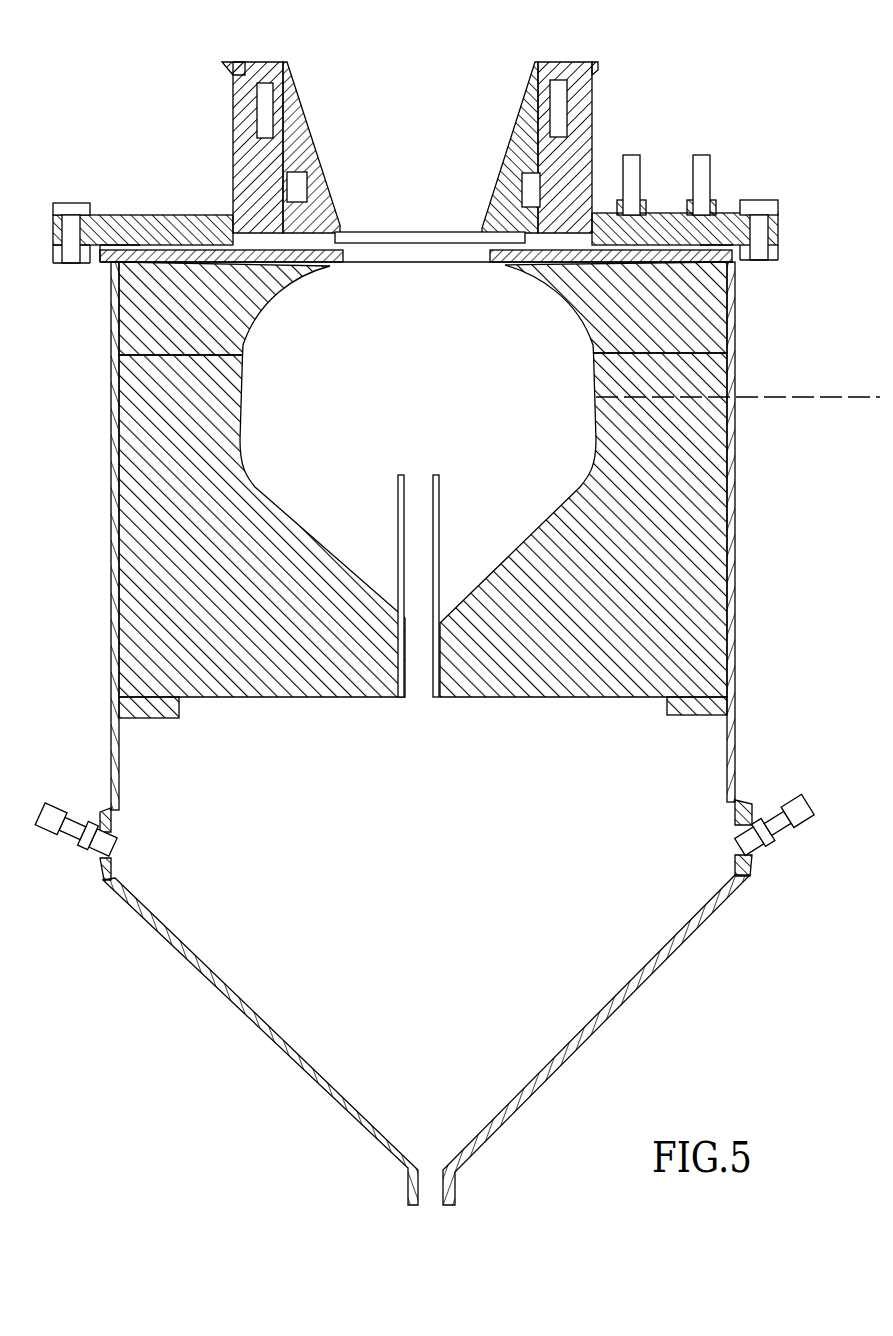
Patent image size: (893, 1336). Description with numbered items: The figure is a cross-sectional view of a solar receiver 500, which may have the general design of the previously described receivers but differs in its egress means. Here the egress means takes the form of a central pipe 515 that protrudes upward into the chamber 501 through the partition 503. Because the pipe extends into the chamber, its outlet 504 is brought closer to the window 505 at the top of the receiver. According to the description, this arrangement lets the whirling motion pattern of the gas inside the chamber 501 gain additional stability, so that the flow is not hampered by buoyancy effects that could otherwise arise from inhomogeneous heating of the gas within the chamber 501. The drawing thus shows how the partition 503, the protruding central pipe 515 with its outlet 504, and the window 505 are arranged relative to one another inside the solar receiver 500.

The solar receiver 500 is at (118, 108).
The chamber 501 is at (355, 447).
The partition 503 is at (372, 676).
The outlet 504 is at (418, 480).
The window 505 is at (393, 237).
The central pipe 515 is at (437, 522).